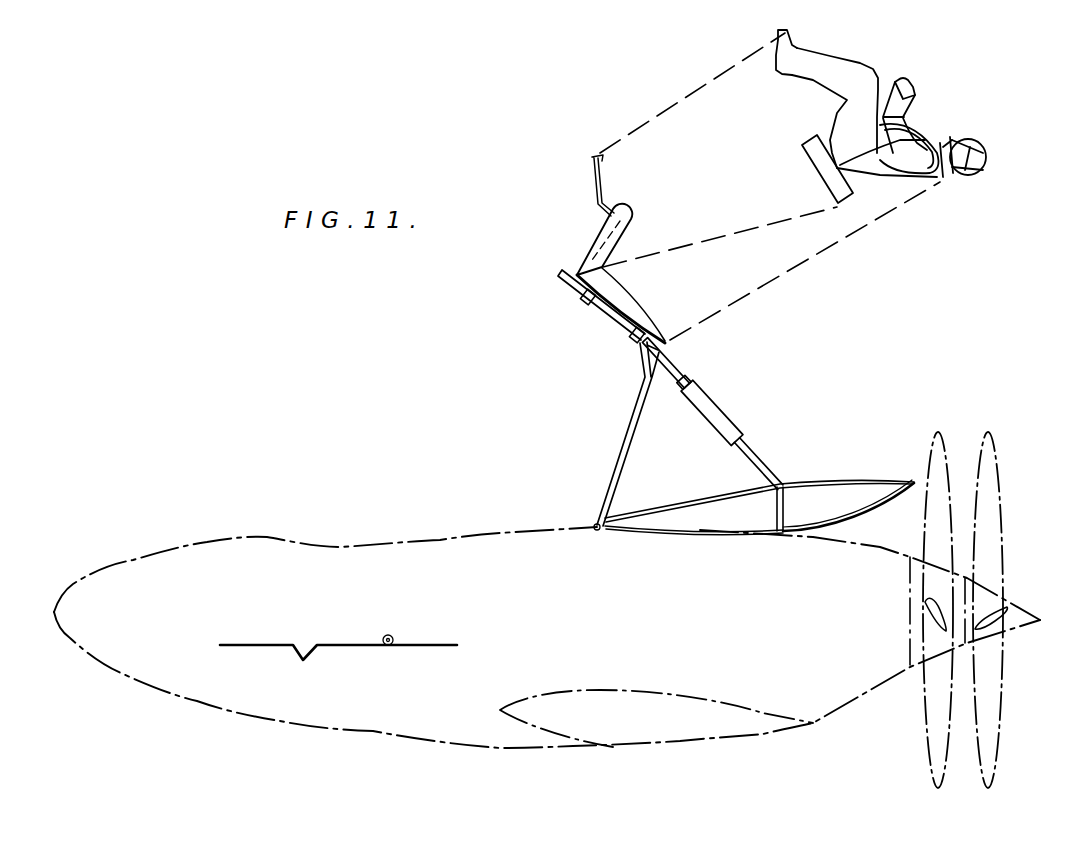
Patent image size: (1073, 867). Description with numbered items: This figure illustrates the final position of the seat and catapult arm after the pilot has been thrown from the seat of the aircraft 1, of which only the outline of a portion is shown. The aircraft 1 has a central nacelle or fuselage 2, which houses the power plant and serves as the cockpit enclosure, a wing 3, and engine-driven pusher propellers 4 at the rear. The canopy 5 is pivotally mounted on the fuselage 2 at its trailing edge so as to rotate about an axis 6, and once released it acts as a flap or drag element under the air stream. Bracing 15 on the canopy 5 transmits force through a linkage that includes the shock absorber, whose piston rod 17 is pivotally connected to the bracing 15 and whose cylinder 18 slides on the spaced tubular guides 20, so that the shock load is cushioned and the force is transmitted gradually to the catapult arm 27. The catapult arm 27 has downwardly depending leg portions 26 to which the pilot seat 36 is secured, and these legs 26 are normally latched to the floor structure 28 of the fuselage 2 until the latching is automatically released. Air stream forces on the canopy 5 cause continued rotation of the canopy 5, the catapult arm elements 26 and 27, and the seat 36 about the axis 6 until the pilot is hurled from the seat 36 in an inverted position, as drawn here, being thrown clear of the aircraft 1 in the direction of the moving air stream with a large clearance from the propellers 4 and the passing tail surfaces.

The aircraft 1 is at (369, 742).
The fuselage 2 is at (455, 733).
The wing 3 is at (608, 697).
The pusher propellers 4 is at (990, 463).
The canopy 5 is at (858, 517).
The axis 6 is at (599, 529).
The bracing structure 15 is at (785, 515).
The shock absorber piston rod 17 is at (770, 453).
The shock absorber cylinder 18 is at (724, 401).
The tubular guides 20 is at (683, 356).
The downwardly depending leg portions 26 is at (609, 317).
The catapult arm 27 is at (636, 448).
The floor structure 28 is at (440, 646).
The pilot seat 36 is at (627, 303).